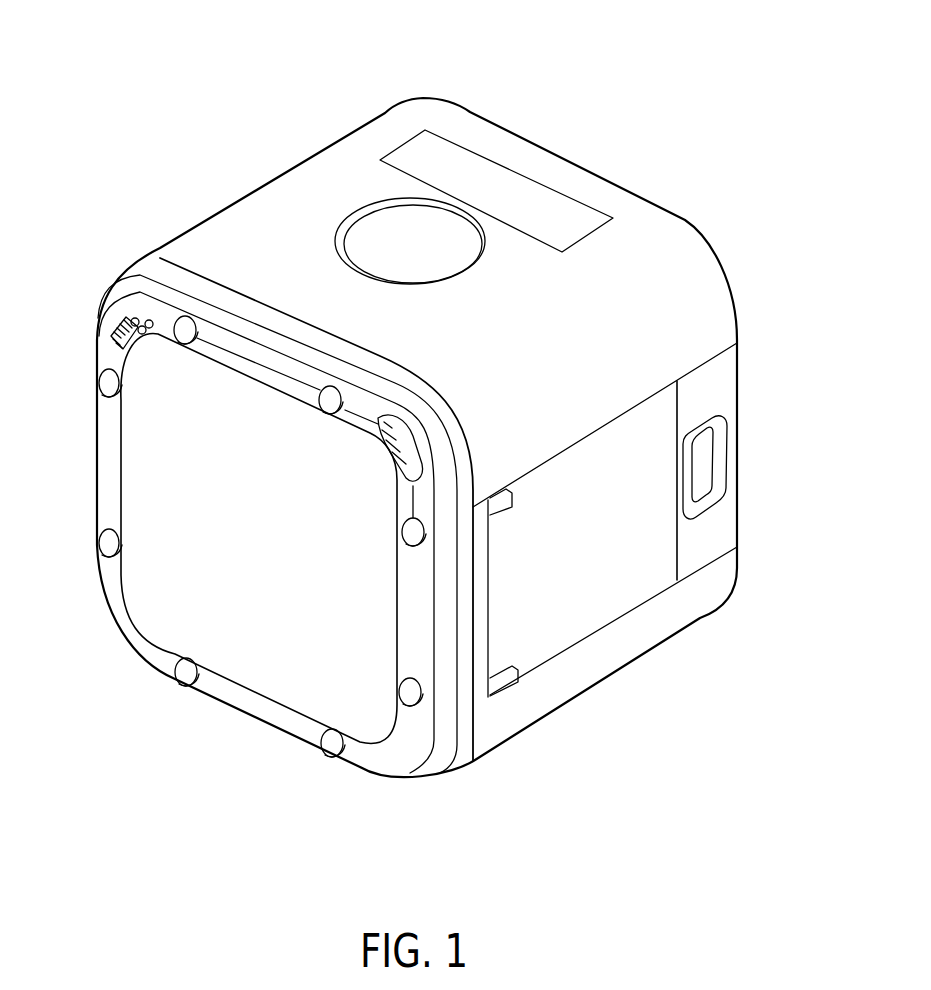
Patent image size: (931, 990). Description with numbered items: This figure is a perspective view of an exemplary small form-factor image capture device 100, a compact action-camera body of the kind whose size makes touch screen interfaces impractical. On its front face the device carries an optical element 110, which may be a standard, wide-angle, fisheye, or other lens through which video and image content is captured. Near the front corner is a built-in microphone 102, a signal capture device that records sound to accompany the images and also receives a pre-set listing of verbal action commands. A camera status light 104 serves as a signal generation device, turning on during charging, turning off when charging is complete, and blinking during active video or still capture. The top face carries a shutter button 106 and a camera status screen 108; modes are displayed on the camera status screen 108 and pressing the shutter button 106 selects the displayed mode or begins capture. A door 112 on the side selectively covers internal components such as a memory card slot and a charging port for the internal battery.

The small form-factor image capture device 100 is at (448, 399).
The built-in microphone 102 is at (112, 323).
The camera status light 104 is at (410, 447).
The shutter button 106 is at (427, 240).
The camera status screen 108 is at (487, 183).
The optical element 110 is at (160, 602).
The door 112 is at (593, 552).